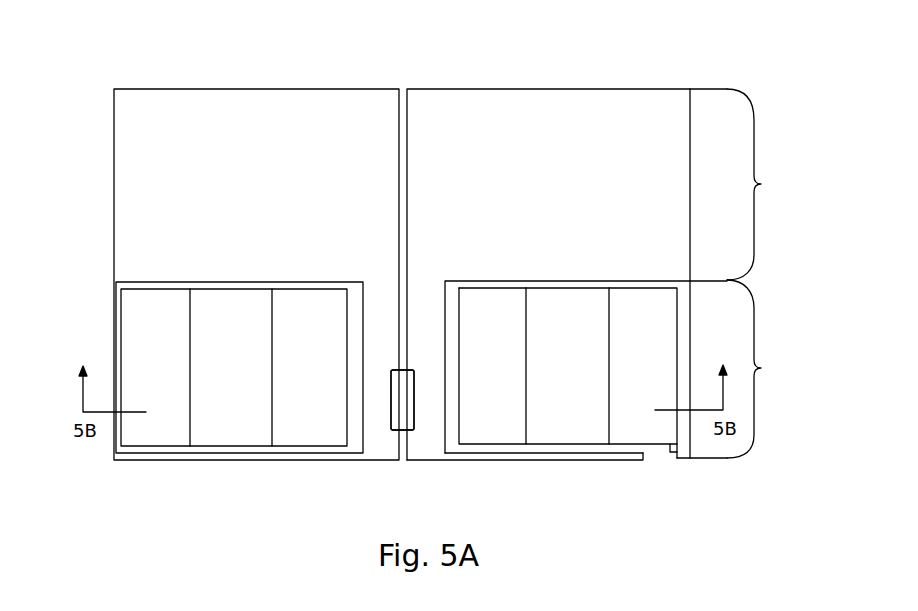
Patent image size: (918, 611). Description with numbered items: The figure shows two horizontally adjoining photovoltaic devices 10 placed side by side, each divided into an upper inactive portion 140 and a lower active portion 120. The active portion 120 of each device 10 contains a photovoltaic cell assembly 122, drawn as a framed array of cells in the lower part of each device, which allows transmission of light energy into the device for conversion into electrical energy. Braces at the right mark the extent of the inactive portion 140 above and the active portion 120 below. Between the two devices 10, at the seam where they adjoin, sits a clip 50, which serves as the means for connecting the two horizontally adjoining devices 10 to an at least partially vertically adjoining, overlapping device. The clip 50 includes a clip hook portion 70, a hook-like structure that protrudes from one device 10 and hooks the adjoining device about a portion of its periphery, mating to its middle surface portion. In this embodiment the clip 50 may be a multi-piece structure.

The photovoltaic device 10 is at (130, 168).
The photovoltaic cell assembly 122 is at (142, 325).
The inactive portion 140 is at (767, 184).
The active portion 120 is at (767, 369).
The clip 50 is at (400, 418).
The clip hook portion 70 is at (348, 441).